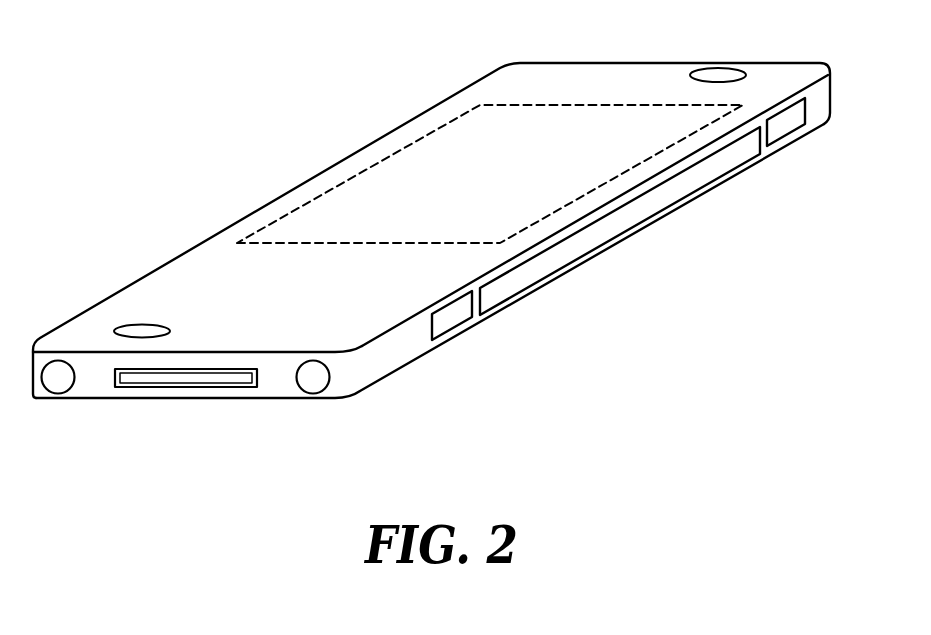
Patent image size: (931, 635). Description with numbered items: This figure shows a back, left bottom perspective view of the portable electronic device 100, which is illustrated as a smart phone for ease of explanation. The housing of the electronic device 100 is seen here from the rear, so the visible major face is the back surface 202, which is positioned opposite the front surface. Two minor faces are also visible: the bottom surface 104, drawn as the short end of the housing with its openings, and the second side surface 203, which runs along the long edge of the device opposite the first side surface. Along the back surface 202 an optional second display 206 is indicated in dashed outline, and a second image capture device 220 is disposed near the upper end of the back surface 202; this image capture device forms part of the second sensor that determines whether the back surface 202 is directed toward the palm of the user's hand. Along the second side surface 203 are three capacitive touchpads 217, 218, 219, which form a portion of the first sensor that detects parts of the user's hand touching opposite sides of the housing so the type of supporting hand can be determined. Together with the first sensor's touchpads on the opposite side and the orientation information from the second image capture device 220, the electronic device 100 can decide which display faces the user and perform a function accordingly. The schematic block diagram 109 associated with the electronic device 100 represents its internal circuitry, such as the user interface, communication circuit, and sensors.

The portable electronic device 100 is at (452, 84).
The bottom surface 104 is at (97, 382).
The schematic block diagram 109 is at (680, 164).
The back surface 202 is at (248, 274).
The second side surface 203 is at (417, 349).
The display 206 is at (353, 244).
The capacitive touchpad 217 is at (787, 127).
The capacitive touchpad 218 is at (680, 183).
The capacitive touchpad 219 is at (452, 318).
The second image capture device 220 is at (718, 70).